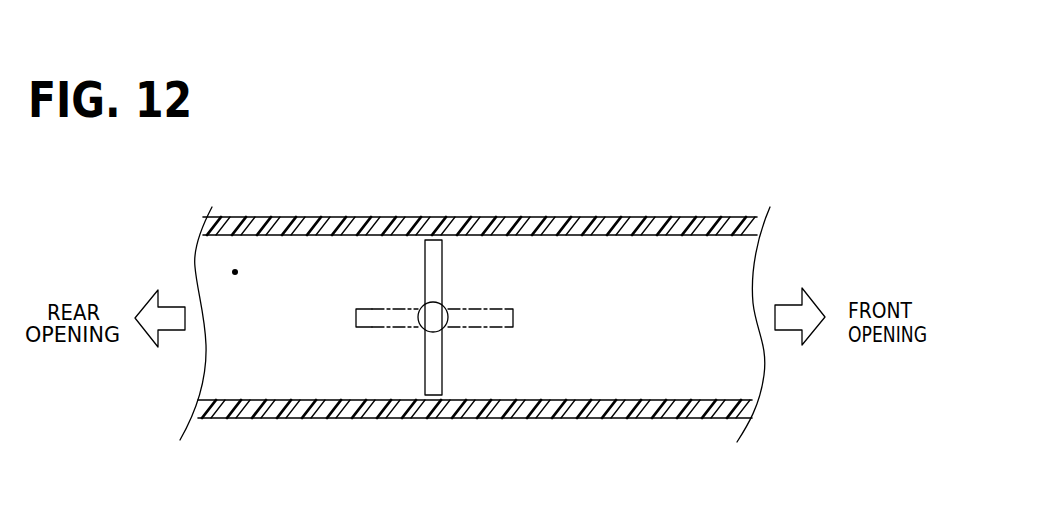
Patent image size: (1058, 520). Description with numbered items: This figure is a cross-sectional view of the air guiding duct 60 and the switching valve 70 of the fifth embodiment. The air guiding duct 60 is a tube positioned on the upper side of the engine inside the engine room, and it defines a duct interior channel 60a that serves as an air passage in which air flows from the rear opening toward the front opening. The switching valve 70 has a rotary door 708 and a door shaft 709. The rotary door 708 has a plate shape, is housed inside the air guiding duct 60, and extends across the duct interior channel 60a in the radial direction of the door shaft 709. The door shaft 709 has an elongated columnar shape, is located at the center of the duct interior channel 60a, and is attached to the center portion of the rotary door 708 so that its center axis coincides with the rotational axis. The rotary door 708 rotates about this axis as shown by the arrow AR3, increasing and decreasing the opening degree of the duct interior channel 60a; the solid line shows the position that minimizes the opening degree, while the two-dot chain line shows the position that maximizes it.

The air guiding duct 60 is at (295, 226).
The duct interior channel 60a is at (235, 272).
The switching valve 70 is at (450, 345).
The rotary door 708 is at (432, 277).
The door shaft 709 is at (425, 315).
The arrow indicating rotation of the rotary door AR3 is at (501, 280).